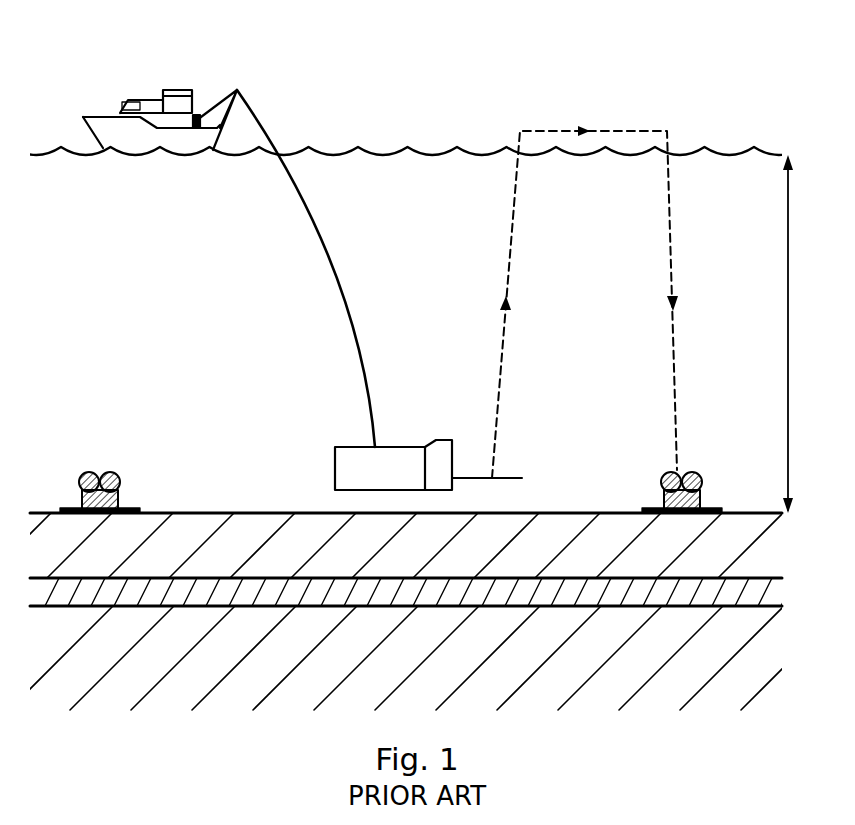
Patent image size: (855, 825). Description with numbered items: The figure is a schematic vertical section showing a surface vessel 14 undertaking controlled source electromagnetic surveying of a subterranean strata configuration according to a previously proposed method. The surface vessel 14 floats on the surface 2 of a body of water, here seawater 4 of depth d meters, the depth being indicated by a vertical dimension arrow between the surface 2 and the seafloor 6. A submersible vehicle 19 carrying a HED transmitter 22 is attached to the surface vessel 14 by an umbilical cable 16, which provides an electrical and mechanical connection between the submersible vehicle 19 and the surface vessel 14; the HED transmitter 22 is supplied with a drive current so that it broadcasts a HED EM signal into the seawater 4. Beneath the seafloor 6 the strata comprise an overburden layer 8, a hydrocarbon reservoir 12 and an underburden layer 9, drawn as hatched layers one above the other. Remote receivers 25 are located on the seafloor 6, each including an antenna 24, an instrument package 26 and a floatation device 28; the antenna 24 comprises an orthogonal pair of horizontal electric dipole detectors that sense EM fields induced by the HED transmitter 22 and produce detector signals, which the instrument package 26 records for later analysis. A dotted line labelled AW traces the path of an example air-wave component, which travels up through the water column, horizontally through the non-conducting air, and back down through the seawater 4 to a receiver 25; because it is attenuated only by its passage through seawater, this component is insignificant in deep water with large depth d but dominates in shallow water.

The surface 2 is at (378, 152).
The seawater 4 is at (167, 334).
The seafloor 6 is at (243, 512).
The overburden layer 8 is at (730, 553).
The underburden layer 9 is at (737, 632).
The hydrocarbon reservoir 12 is at (762, 590).
The surface vessel 14 is at (181, 90).
The umbilical cable 16 is at (349, 301).
The submersible vehicle 19 is at (398, 447).
The HED transmitter 22 is at (512, 480).
The antenna 24 is at (73, 509).
The remote receiver 25 is at (391, 462).
The instrument package 26 is at (120, 504).
The floatation device 28 is at (112, 473).
The air-wave component AW is at (511, 243).
The depth d is at (795, 334).